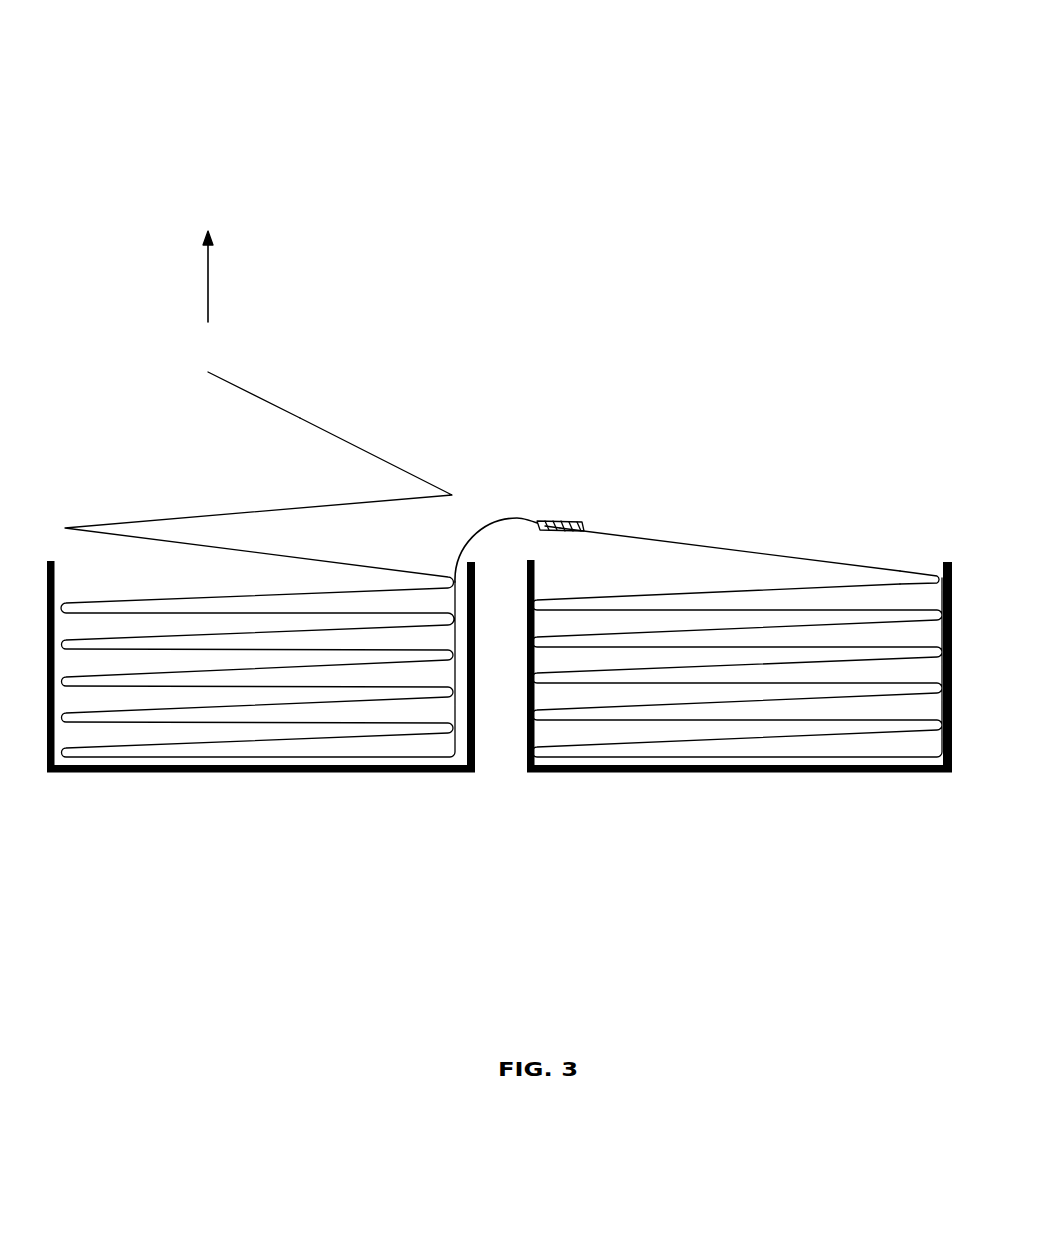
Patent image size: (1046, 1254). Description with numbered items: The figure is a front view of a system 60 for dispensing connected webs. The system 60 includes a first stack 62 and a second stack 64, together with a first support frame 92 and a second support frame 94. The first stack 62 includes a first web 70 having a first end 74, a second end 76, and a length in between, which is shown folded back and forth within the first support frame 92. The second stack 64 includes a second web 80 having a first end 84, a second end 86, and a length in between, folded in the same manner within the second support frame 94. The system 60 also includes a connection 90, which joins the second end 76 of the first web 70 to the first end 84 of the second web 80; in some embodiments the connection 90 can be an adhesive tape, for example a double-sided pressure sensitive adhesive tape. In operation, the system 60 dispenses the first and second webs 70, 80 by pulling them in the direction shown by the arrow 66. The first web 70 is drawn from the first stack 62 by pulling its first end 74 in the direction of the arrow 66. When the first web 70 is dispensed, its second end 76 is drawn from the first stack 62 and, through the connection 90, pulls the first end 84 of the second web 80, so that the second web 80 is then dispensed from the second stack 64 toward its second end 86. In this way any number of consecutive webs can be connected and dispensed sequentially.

The system 60 is at (568, 90).
The first stack 62 is at (398, 322).
The second stack 64 is at (841, 319).
The arrow 66 is at (190, 276).
The first web 70 is at (332, 432).
The first end of the first web 74 is at (208, 372).
The second end of the first web 76 is at (517, 515).
The second web 80 is at (662, 541).
The first end of the second web 84 is at (567, 532).
The second end of the second web 86 is at (937, 574).
The connection 90 is at (584, 523).
The first support frame 92 is at (435, 772).
The second support frame 94 is at (755, 773).